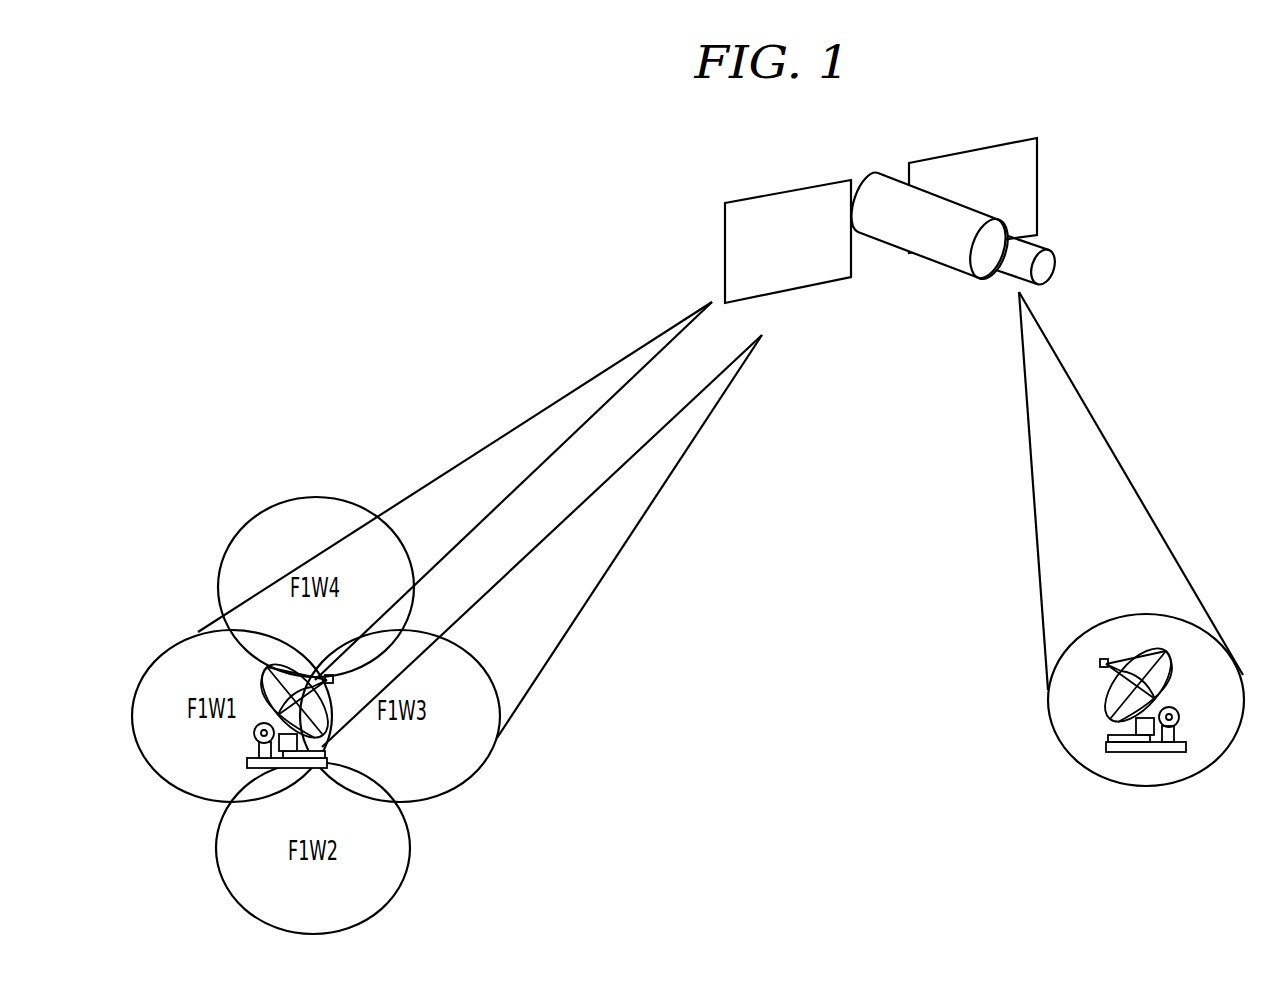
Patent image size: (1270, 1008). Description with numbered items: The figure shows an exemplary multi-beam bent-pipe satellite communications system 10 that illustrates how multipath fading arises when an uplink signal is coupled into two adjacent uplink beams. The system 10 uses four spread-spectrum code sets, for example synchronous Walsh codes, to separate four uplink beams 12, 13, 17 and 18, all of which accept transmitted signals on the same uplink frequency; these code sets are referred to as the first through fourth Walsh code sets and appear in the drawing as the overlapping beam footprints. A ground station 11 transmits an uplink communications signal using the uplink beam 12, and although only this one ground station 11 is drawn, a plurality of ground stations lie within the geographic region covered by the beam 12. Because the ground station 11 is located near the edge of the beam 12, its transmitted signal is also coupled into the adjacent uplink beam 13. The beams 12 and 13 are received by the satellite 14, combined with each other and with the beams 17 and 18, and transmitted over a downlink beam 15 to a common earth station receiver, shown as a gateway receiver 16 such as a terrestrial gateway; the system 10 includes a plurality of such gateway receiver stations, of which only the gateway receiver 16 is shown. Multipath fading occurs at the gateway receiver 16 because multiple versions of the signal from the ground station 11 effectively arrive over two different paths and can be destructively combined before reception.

The multi-beam bent-pipe satellite communications system 10 is at (355, 293).
The ground station 11 is at (252, 752).
The uplink beam 12 is at (510, 462).
The adjacent uplink beam 13 is at (614, 531).
The satellite 14 is at (930, 258).
The downlink beam 15 is at (1115, 506).
The gateway receiver 16 is at (1175, 697).
The uplink beam 17 is at (218, 578).
The uplink beam 18 is at (217, 842).